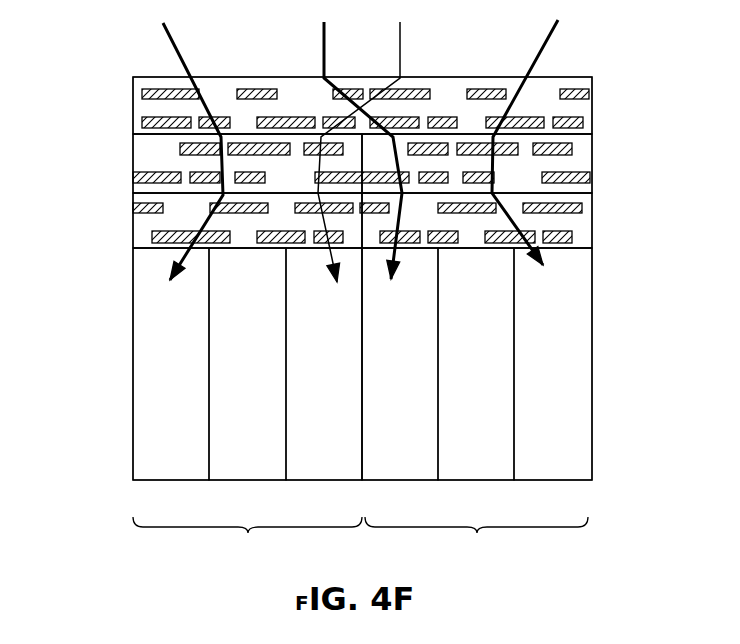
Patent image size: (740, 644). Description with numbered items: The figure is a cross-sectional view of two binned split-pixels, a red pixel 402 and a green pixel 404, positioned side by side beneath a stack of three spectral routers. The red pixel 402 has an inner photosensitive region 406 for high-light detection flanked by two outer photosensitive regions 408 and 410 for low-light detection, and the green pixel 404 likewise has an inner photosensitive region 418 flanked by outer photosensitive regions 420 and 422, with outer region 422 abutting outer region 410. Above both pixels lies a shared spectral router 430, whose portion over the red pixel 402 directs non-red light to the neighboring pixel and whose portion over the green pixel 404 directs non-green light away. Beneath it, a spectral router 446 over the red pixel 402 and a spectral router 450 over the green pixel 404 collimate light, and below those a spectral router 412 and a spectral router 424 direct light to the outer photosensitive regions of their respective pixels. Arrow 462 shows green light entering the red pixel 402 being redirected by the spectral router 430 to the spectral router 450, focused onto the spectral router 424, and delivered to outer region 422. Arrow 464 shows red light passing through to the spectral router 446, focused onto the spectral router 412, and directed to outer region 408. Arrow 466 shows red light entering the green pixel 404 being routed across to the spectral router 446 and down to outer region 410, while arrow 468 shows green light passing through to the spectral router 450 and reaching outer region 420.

The red pixel 402 is at (247, 540).
The green pixel 404 is at (476, 540).
The inner photosensitive region 406 is at (223, 331).
The outer photosensitive region 408 is at (159, 368).
The outer photosensitive region 410 is at (315, 462).
The spectral router 412 is at (147, 227).
The inner photosensitive region 418 is at (500, 330).
The outer photosensitive region 420 is at (564, 367).
The outer photosensitive region 422 is at (408, 460).
The spectral router 424 is at (577, 225).
The spectral router 430 is at (147, 107).
The spectral router 446 is at (147, 163).
The spectral router 450 is at (577, 162).
The arrow 462 is at (320, 50).
The arrow 464 is at (165, 38).
The arrow 466 is at (402, 40).
The arrow 468 is at (548, 42).